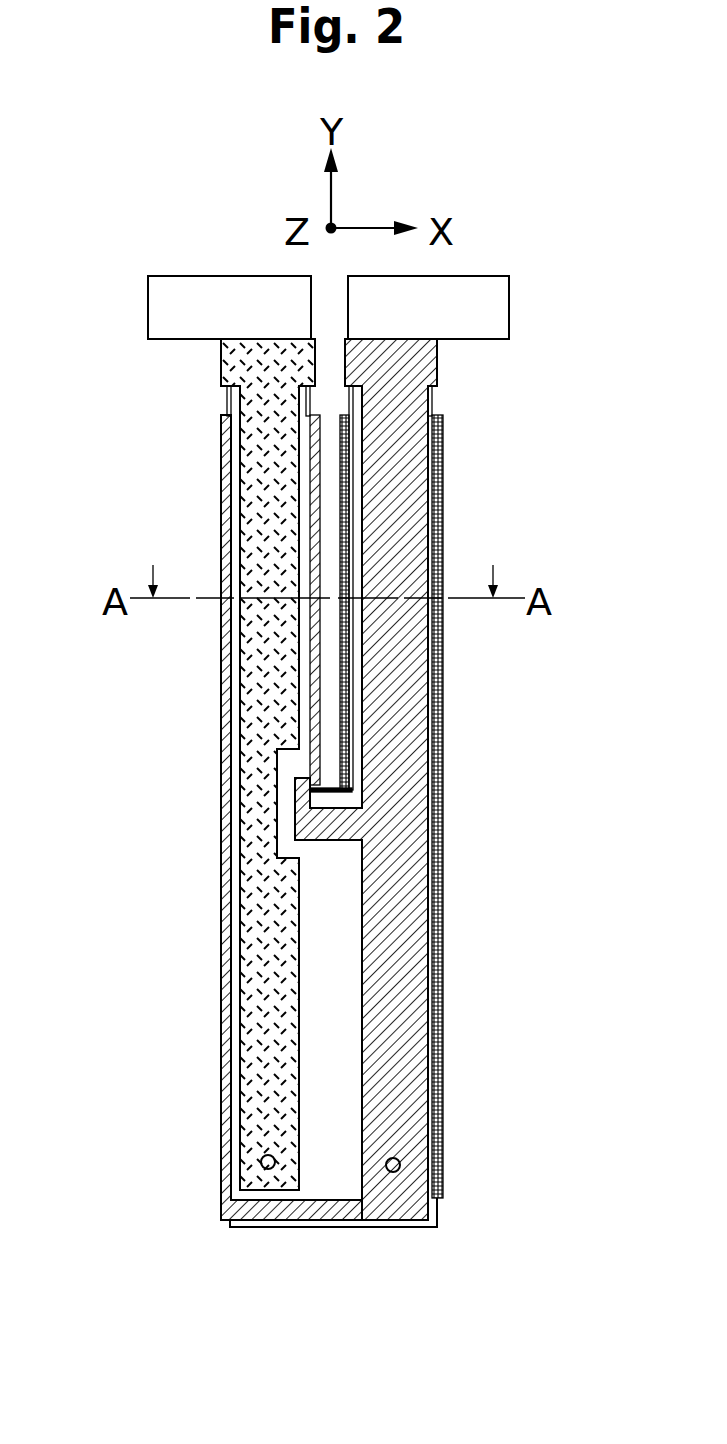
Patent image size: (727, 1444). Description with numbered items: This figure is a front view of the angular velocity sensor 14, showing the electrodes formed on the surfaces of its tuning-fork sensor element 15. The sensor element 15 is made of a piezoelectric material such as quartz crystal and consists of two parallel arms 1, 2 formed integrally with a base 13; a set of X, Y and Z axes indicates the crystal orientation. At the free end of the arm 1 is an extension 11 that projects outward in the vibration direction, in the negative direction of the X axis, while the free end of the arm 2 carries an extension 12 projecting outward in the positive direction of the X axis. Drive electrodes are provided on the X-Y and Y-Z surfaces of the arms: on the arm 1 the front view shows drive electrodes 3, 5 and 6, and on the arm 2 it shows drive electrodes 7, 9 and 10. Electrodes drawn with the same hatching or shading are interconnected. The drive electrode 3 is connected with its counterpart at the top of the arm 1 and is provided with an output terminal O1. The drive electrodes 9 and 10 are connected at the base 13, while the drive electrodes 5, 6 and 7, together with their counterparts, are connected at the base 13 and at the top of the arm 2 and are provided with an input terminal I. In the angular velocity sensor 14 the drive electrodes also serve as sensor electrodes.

The arm 1 is at (229, 400).
The arm 2 is at (432, 402).
The drive electrode 3 is at (255, 665).
The drive electrode 5 is at (222, 745).
The drive electrode 6 is at (340, 490).
The drive electrode 7 is at (405, 692).
The drive electrode 9 is at (350, 522).
The drive electrode 10 is at (443, 790).
The extension 11 is at (175, 300).
The extension 12 is at (500, 302).
The base 13 is at (335, 957).
The angular velocity sensor 14 is at (198, 1028).
The tuning-fork sensor element 15 is at (328, 1227).
The output terminal O1 is at (262, 1165).
The input terminal I is at (398, 1152).